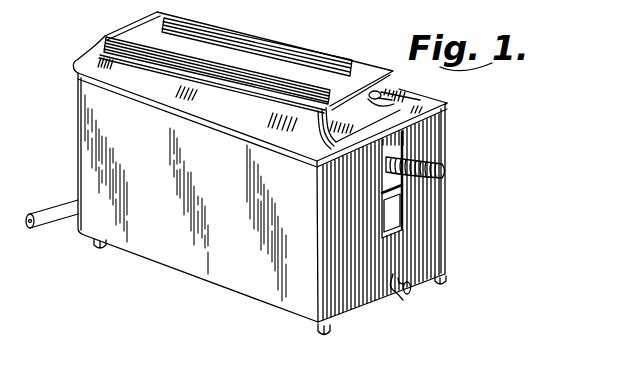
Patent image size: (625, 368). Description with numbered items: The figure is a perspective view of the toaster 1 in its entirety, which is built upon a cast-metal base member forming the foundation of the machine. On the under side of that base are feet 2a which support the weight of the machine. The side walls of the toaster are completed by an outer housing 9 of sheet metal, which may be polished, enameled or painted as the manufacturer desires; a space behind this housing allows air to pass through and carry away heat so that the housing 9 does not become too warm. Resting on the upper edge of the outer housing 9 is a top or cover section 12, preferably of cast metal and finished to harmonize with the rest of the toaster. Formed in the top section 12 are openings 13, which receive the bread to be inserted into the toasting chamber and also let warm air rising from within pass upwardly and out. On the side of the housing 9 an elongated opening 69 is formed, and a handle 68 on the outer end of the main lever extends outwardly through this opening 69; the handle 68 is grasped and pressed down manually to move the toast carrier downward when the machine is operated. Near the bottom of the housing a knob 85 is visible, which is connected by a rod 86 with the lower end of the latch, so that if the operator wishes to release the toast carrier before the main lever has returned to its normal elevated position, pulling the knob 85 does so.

The toaster 1 is at (181, 279).
The feet 2a is at (98, 245).
The outer housing 9 is at (442, 223).
The top or cover section 12 is at (432, 97).
The openings 13 is at (106, 38).
The handle 68 is at (444, 164).
The elongated opening 69 is at (393, 212).
The knob 85 is at (408, 295).
The rod 86 is at (398, 291).